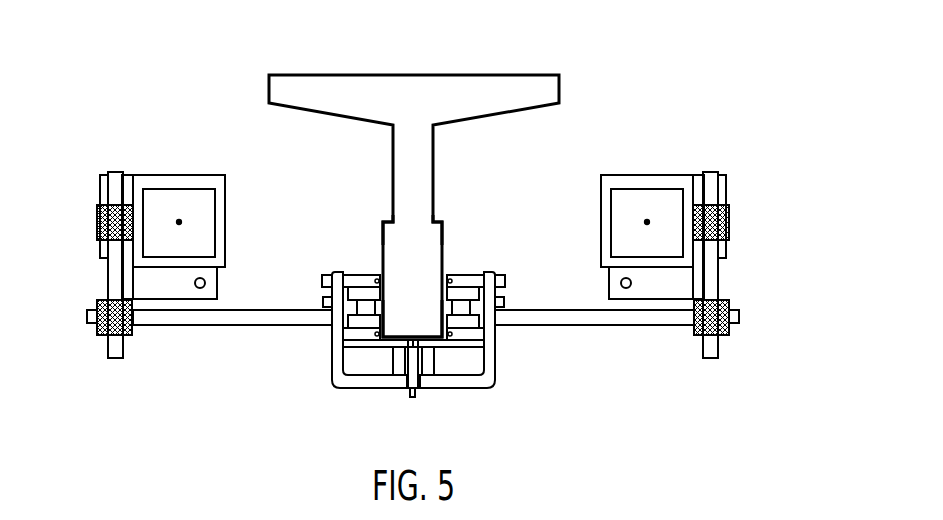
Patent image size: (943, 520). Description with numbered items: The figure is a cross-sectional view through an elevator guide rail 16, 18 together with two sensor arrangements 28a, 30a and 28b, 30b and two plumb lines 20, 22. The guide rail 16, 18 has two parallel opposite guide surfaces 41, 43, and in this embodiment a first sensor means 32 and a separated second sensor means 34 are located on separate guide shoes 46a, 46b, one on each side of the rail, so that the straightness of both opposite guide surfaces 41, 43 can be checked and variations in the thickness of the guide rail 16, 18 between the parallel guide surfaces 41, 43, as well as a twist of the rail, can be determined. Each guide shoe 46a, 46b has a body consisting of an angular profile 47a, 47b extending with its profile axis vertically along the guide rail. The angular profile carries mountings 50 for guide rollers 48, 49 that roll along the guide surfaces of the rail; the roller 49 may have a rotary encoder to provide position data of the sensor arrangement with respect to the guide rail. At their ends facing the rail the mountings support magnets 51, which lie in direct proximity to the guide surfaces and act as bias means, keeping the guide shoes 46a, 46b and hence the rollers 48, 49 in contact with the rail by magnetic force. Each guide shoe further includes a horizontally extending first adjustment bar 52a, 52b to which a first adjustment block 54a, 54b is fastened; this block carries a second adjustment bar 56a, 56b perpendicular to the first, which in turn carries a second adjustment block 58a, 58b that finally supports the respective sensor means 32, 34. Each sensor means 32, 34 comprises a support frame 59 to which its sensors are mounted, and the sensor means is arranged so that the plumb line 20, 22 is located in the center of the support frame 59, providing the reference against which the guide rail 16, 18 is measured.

The guide rail 16 is at (414, 184).
The guide rail 18 is at (425, 92).
The plumb line 20 is at (179, 216).
The plumb line 22 is at (647, 216).
The sensor arrangement 28a is at (123, 200).
The sensor arrangement 30a is at (174, 92).
The sensor arrangement 28b is at (702, 200).
The sensor arrangement 30b is at (652, 92).
The first sensor means 32 is at (136, 163).
The second sensor means 34 is at (690, 163).
The guide surface 41 is at (372, 232).
The guide surface 43 is at (443, 249).
The guide shoe 46a is at (312, 396).
The guide shoe 46b is at (515, 396).
The angular profile 47a is at (332, 361).
The angular profile 47b is at (495, 361).
The guide roller 48 is at (330, 300).
The guide roller 49 is at (413, 398).
The mounting 50 is at (352, 273).
The magnet 51 is at (438, 283).
The first adjustment bar 52a is at (183, 326).
The first adjustment bar 52b is at (643, 326).
The first adjustment block 54a is at (98, 332).
The first adjustment block 54b is at (728, 332).
The second adjustment bar 56a is at (112, 280).
The second adjustment bar 56b is at (714, 280).
The second adjustment block 58a is at (97, 213).
The second adjustment block 58b is at (730, 213).
The support frame 59 is at (214, 173).